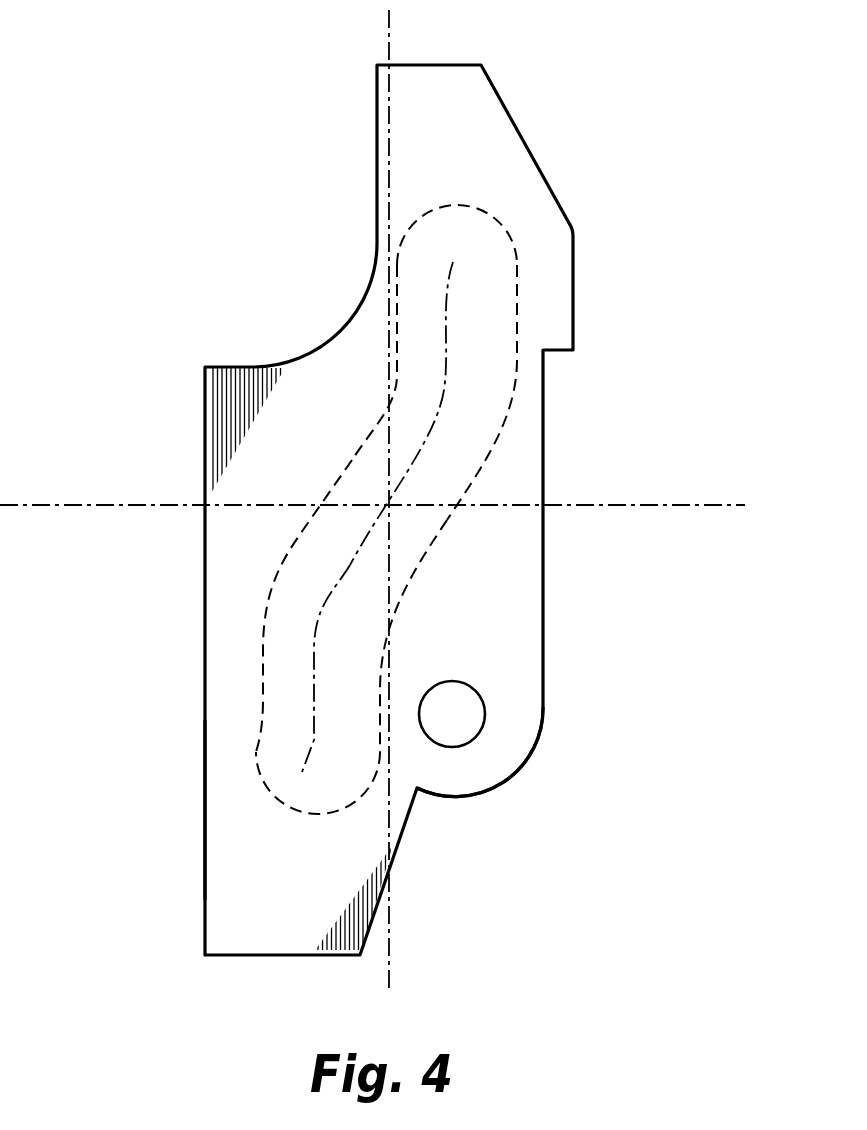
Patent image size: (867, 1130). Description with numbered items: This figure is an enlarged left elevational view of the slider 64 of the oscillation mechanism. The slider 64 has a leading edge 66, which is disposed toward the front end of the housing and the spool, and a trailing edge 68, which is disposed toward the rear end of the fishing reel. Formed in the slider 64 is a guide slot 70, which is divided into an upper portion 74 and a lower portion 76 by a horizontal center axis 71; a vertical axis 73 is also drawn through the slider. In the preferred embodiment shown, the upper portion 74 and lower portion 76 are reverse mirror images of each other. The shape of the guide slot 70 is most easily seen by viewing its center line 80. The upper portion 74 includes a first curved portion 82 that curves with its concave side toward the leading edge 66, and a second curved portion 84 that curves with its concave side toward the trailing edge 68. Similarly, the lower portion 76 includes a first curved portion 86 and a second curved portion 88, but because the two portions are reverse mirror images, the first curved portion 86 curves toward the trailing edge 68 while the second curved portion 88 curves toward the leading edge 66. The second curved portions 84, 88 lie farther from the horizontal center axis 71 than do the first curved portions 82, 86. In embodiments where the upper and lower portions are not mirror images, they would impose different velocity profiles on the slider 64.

The slider 64 is at (291, 887).
The leading edge 66 is at (194, 785).
The trailing edge 68 is at (561, 730).
The guide slot 70 is at (443, 527).
The horizontal center axis 71 is at (250, 507).
The vertical axis 73 is at (393, 973).
The upper portion 74 is at (524, 395).
The lower portion 76 is at (247, 640).
The center line 80 is at (340, 577).
The first curved portion 82 is at (430, 393).
The second curved portion 84 is at (464, 307).
The first curved portion 86 is at (334, 625).
The second curved portion 88 is at (302, 715).